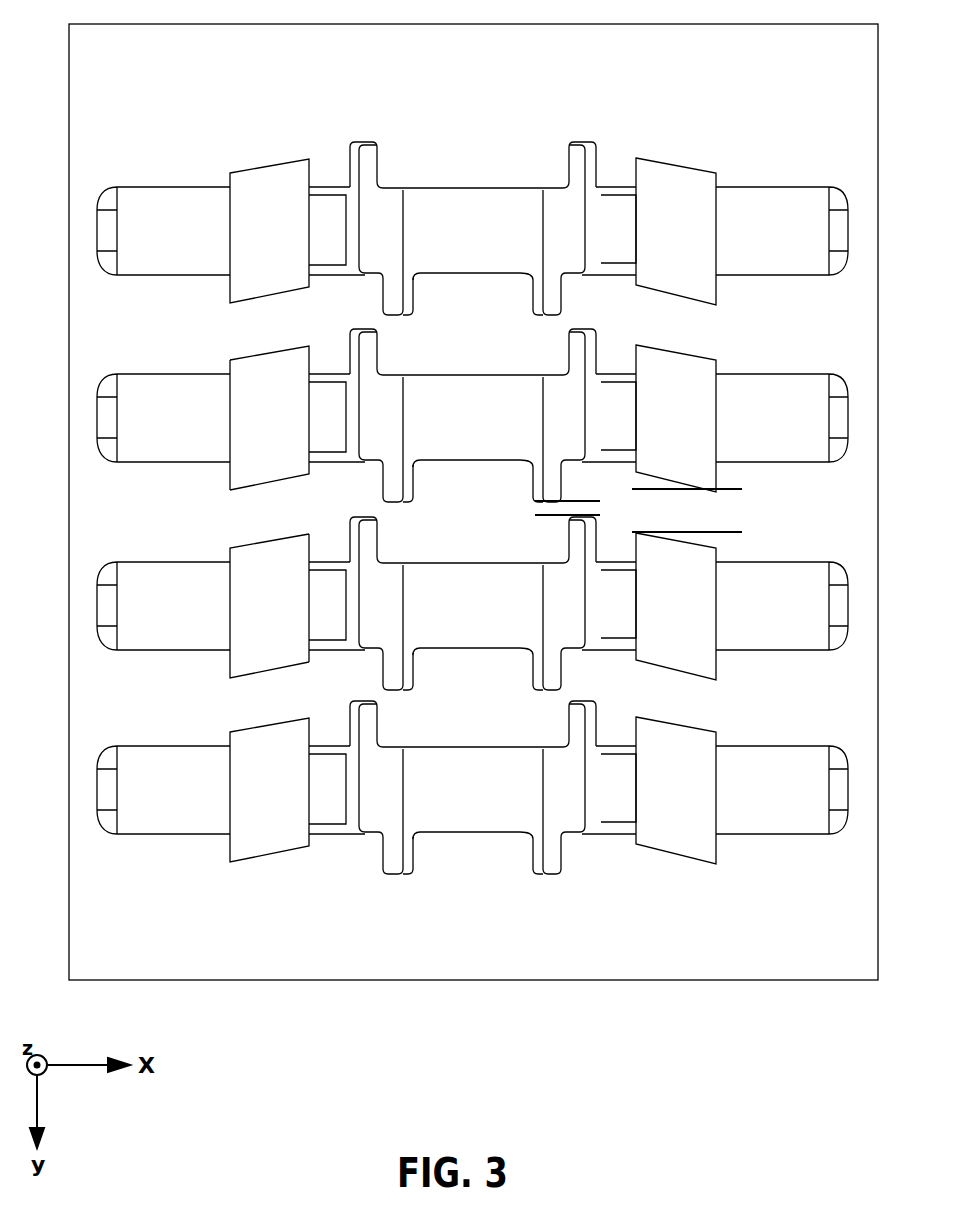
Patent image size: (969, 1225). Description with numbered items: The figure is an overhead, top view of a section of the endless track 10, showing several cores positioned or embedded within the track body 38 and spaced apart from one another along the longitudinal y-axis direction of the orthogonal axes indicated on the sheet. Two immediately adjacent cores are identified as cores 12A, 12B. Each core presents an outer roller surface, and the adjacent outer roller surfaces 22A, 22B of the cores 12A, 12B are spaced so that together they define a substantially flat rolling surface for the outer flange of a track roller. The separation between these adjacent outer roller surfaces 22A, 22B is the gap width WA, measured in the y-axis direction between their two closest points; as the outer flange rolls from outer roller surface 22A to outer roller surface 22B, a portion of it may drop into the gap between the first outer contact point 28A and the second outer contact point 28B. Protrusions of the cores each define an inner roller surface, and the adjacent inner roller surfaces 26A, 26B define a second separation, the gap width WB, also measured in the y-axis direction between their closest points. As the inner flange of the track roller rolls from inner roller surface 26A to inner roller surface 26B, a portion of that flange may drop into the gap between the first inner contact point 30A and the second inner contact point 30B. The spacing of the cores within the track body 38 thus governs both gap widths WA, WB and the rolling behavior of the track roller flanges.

The endless track 10 is at (81, 75).
The core 12A is at (163, 418).
The core 12B is at (163, 606).
The outer roller surface 22A is at (269, 418).
The outer roller surface 22B is at (269, 606).
The inner roller surface 26A is at (386, 423).
The inner roller surface 26B is at (385, 618).
The first outer contact point 28A is at (230, 490).
The second outer contact point 28B is at (309, 534).
The first inner contact point 30A is at (395, 502).
The second inner contact point 30B is at (366, 516).
The track body 38 is at (488, 934).
The gap width WA is at (742, 489).
The gap width WB is at (535, 500).